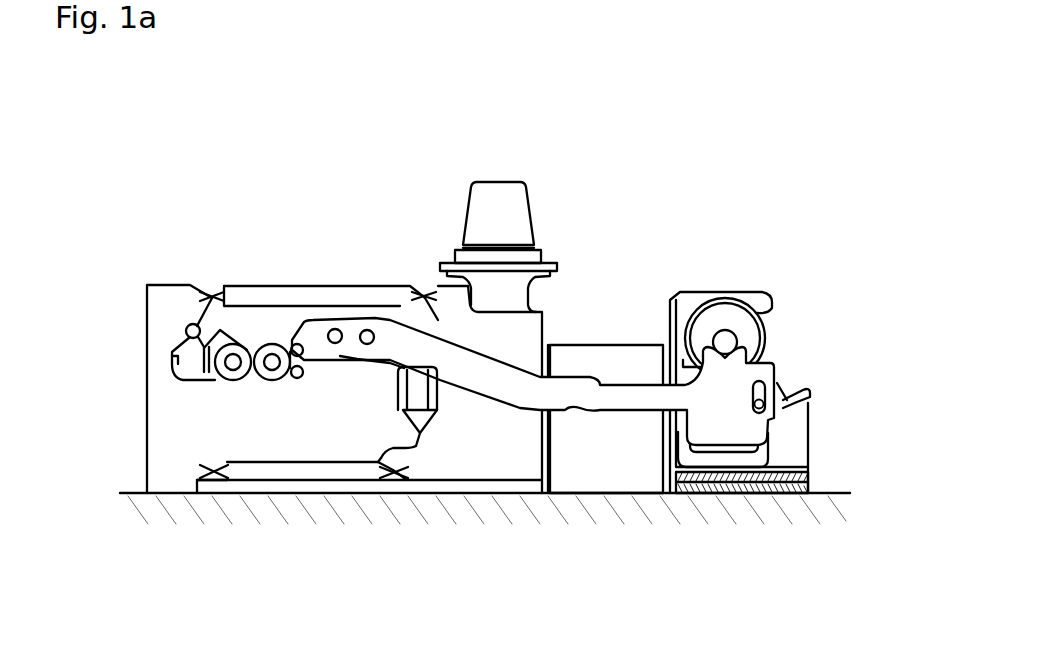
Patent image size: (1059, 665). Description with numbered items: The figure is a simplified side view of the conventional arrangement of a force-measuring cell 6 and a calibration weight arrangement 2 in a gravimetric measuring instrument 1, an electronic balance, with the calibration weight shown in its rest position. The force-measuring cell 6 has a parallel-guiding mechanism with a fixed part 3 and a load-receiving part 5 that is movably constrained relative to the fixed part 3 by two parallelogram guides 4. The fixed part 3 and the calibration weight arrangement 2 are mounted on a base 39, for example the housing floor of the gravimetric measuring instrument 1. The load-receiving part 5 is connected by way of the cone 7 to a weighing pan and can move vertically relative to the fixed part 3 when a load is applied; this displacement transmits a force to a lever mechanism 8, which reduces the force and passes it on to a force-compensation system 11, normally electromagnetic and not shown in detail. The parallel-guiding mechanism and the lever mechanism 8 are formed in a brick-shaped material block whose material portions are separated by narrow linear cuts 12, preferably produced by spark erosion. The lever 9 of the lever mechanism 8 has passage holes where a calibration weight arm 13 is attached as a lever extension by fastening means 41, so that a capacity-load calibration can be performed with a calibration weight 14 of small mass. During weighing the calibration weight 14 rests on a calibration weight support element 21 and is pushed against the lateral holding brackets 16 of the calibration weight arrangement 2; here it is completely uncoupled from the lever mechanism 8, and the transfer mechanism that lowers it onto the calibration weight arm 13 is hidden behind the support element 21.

The gravimetric measuring instrument 1 is at (583, 161).
The calibration weight arrangement 2 is at (758, 240).
The fixed part 3 is at (176, 430).
The parallelogram guides 4 is at (340, 300).
The load-receiving part 5 is at (521, 450).
The force-measuring cell 6 is at (166, 233).
The cone 7 is at (497, 213).
The lever mechanism 8 is at (253, 394).
The lever 9 is at (283, 327).
The force-compensation system 11 is at (622, 462).
The linear cuts 12 is at (250, 307).
The calibration weight arm 13 is at (562, 390).
The calibration weight 14 is at (753, 333).
The holding brackets 16 is at (763, 293).
The calibration weight support element 21 is at (765, 377).
The base 39 is at (481, 532).
The fastening means 41 is at (371, 330).